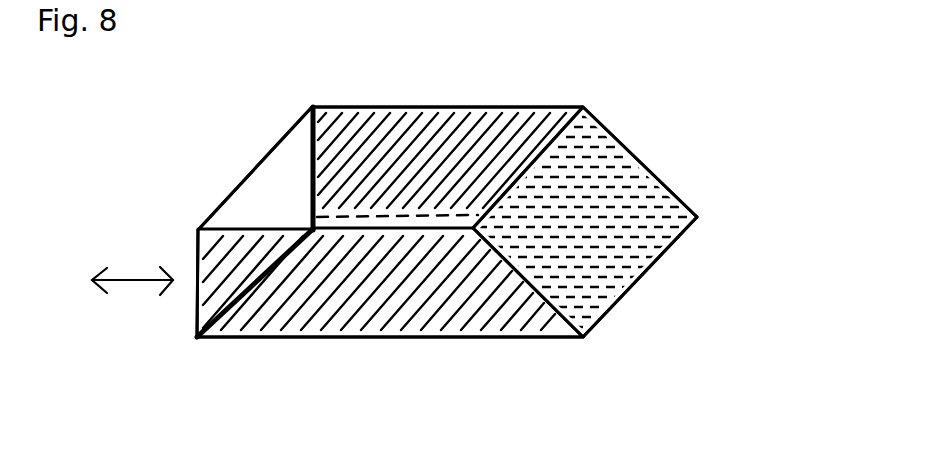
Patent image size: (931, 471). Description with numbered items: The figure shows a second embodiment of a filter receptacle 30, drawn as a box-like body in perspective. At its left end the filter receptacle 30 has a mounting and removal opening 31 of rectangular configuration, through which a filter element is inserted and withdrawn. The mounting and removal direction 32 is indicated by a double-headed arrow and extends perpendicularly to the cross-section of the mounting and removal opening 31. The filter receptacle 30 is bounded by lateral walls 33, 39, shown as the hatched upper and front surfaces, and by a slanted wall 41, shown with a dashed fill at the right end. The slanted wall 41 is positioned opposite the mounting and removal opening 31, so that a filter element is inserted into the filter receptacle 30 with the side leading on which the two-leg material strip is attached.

The filter receptacle 30 is at (731, 139).
The mounting and removal opening 31 is at (252, 160).
The mounting and removal direction 32 is at (132, 273).
The lateral wall 33 is at (452, 102).
The lateral wall 39 is at (400, 338).
The slanted wall 41 is at (640, 160).